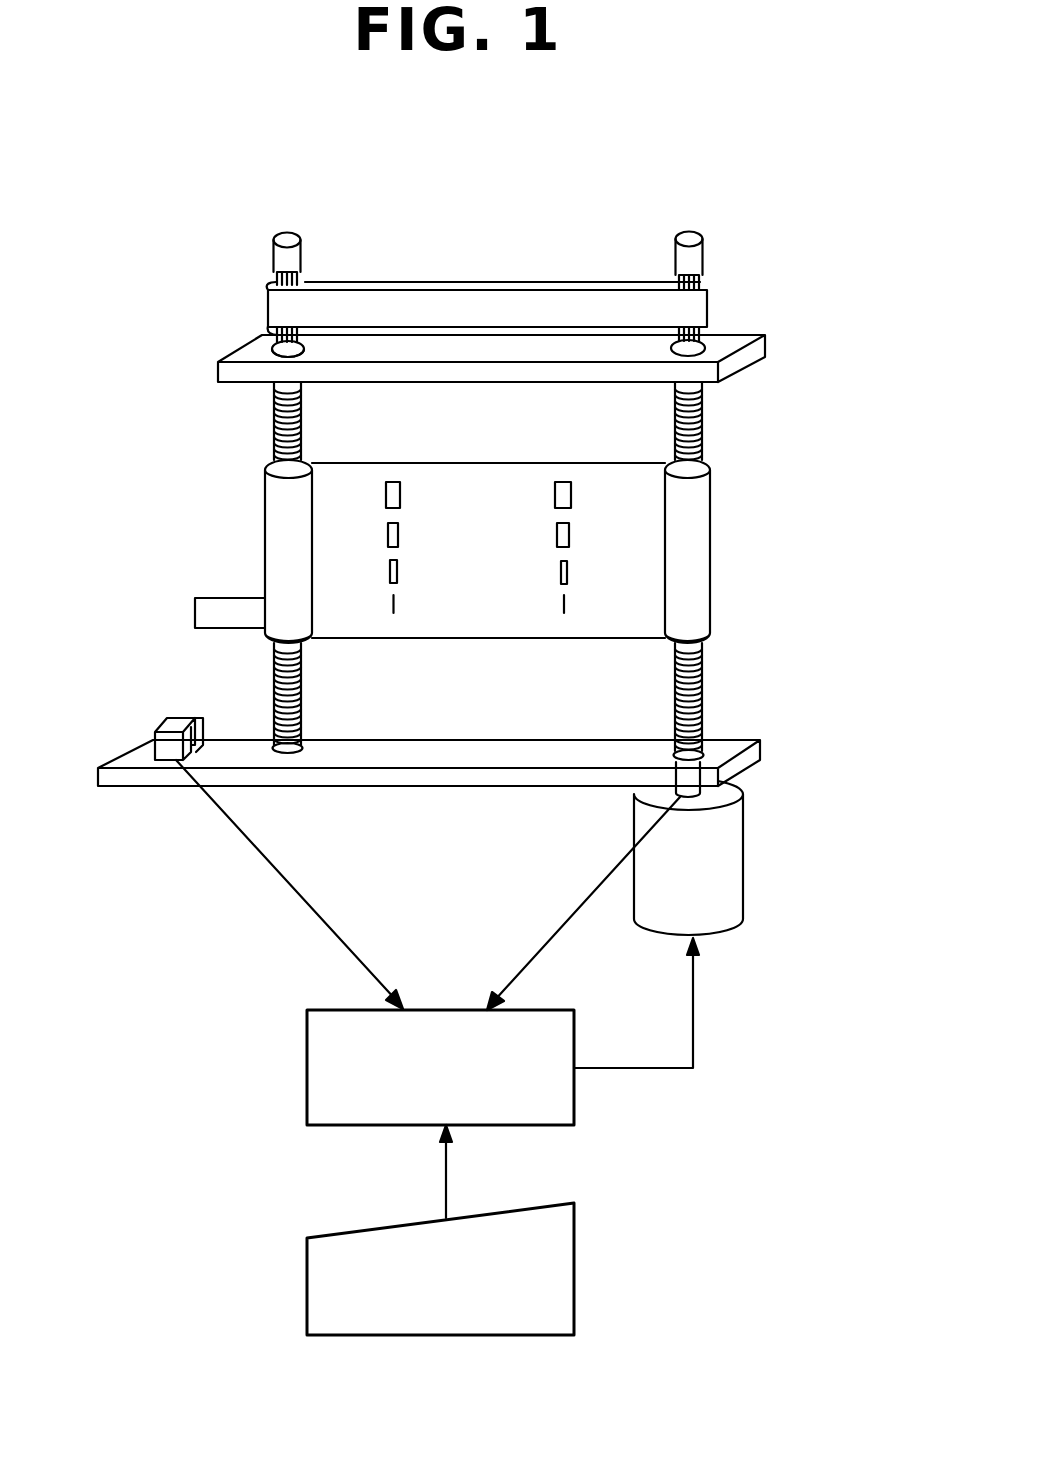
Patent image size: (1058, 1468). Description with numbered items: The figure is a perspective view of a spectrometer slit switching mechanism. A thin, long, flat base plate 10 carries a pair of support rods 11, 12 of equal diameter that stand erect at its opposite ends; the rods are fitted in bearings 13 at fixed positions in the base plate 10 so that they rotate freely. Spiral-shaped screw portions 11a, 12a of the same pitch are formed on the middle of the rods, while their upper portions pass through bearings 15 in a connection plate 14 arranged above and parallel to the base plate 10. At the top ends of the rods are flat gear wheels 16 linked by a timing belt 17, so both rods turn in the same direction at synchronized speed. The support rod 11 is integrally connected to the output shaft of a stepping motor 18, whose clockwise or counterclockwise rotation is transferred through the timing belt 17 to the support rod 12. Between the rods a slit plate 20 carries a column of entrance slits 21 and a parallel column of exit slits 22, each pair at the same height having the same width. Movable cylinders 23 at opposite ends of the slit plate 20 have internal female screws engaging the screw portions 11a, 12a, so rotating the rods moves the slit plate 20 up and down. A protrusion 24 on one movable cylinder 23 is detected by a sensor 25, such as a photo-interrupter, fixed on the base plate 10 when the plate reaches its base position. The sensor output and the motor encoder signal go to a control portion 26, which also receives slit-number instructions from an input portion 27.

The base plate 10 is at (515, 780).
The support rod 11 is at (708, 691).
The screw portion 11a is at (674, 681).
The support rod 12 is at (308, 718).
The screw portion 12a is at (303, 690).
The bearing 13 is at (298, 756).
The connection plate 14 is at (755, 352).
The bearing 15 is at (272, 350).
The flat gear wheel 16 is at (303, 282).
The timing belt 17 is at (487, 283).
The stepping motor 18 is at (745, 884).
The slit plate 20 is at (460, 462).
The entrance slit 21 is at (396, 480).
The exit slit 22 is at (566, 480).
The movable cylinder 23 is at (280, 513).
The protrusion 24 is at (222, 598).
The sensor 25 is at (161, 730).
The control portion 26 is at (576, 1104).
The input portion 27 is at (576, 1300).